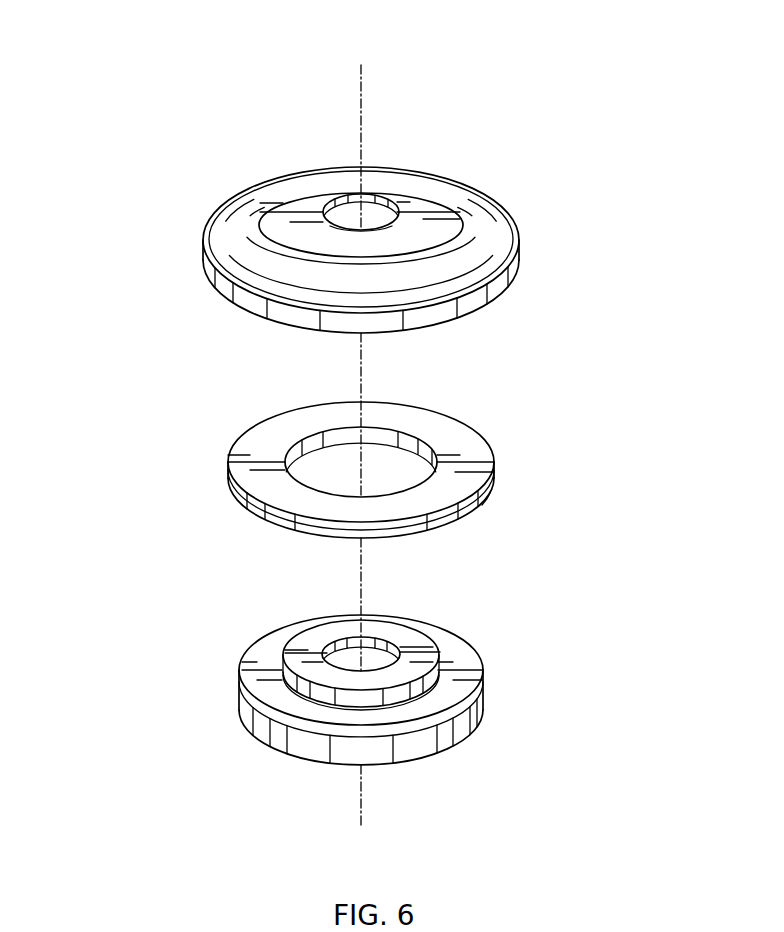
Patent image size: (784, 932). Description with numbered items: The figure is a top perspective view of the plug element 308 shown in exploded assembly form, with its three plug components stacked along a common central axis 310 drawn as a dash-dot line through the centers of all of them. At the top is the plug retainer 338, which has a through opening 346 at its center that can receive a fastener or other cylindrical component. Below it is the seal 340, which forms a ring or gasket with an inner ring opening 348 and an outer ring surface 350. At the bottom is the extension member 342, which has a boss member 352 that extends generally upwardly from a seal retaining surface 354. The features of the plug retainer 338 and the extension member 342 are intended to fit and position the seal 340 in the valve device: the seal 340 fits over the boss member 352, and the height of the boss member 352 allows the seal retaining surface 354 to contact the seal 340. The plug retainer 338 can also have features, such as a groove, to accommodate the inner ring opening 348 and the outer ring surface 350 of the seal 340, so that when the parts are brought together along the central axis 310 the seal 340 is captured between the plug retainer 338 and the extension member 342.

The plug element 308 is at (142, 75).
The central axis 310 is at (361, 92).
The plug retainer 338 is at (542, 220).
The seal 340 is at (542, 435).
The extension member 342 is at (517, 652).
The through opening 346 is at (375, 223).
The inner ring opening 348 is at (397, 477).
The outer ring surface 350 is at (492, 498).
The boss member 352 is at (400, 633).
The seal retaining surface 354 is at (450, 690).